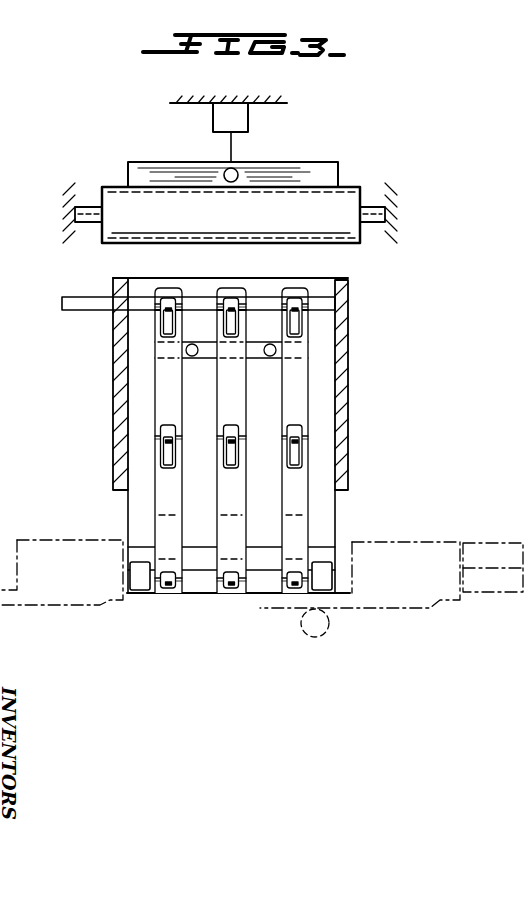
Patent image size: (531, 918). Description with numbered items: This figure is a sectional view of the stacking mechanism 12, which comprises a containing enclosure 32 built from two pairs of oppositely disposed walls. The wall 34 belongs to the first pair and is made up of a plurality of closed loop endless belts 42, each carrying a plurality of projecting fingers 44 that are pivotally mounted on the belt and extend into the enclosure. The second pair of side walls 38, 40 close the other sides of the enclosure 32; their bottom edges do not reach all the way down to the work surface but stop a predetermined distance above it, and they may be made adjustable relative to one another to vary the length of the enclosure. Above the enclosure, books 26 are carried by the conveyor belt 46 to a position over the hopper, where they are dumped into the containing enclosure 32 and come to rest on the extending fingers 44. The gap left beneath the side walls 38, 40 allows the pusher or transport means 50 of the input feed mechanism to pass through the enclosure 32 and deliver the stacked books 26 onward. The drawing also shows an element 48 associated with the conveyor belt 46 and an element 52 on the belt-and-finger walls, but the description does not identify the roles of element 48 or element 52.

The stacking mechanism 12 is at (58, 416).
The books 26 is at (305, 165).
The containing enclosure 32 is at (240, 435).
The wall 34 is at (272, 417).
The side wall 38 is at (113, 447).
The side wall 40 is at (348, 456).
The closed loop endless belt 42 is at (173, 418).
The projecting fingers 44 is at (216, 327).
The conveyor belt 46 is at (358, 186).
The mounting bracket 48 is at (248, 120).
The pusher or transport means 50 is at (78, 530).
The pivot pin 52 is at (195, 357).